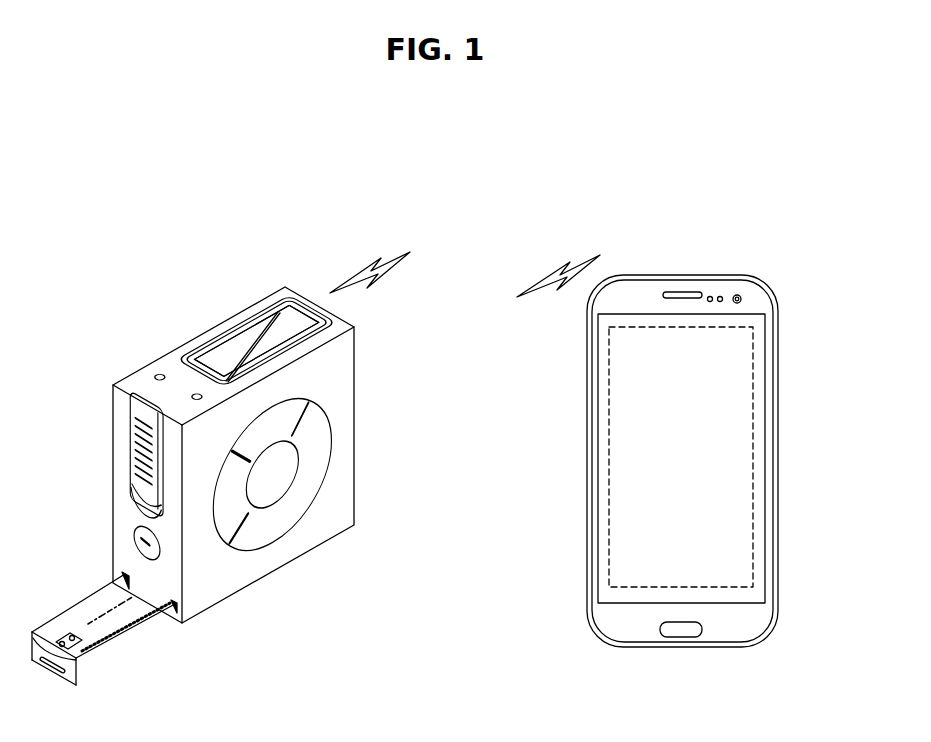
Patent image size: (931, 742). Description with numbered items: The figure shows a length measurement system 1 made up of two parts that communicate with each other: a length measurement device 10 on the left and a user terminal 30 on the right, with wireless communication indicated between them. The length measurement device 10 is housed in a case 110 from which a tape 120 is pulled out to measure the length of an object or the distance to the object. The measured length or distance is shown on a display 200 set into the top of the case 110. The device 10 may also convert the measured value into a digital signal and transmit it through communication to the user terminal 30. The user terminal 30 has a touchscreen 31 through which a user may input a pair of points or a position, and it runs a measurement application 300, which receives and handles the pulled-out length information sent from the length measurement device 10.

The length measurement system 1 is at (423, 134).
The length measurement device 10 is at (176, 323).
The case 110 is at (345, 478).
The tape 120 is at (110, 640).
The display 200 is at (285, 322).
The user terminal 30 is at (749, 260).
The touchscreen 31 is at (765, 360).
The measurement application 300 is at (753, 462).